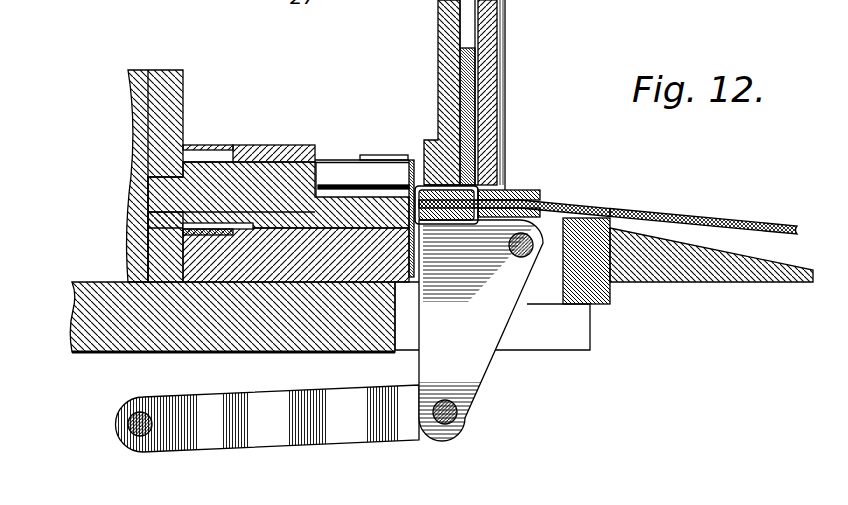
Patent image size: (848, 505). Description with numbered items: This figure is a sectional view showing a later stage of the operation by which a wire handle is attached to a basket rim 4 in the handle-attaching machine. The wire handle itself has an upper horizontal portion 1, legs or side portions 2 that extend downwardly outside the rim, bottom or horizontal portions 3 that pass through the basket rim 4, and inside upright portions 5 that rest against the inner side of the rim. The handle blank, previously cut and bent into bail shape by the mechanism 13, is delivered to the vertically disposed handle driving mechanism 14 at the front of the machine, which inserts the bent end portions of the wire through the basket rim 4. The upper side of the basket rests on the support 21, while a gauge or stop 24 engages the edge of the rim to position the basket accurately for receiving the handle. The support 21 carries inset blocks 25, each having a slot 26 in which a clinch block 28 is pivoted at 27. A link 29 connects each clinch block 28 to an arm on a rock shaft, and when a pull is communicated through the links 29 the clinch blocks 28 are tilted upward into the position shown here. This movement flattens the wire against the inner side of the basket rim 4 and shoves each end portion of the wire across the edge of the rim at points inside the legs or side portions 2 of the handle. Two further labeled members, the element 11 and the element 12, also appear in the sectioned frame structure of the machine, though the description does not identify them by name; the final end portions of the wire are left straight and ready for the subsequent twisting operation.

The upper horizontal portion 1 is at (318, 186).
The legs or side portions 2 is at (365, 186).
The bottom or horizontal portions 3 is at (485, 201).
The basket rim 4 is at (545, 193).
The inside upright portions 5 is at (460, 224).
The lower block 11 is at (415, 258).
The upper block 12 is at (268, 170).
The mechanism for cutting off and bending wire 13 is at (212, 149).
The handle driving mechanism 14 is at (452, 157).
The support 21 is at (677, 267).
The gauge or stop 24 is at (400, 352).
The inset blocks 25 is at (655, 216).
The slot 26 is at (550, 228).
The pivot 27 is at (583, 282).
The clinch block 28 is at (478, 370).
The links 29 is at (260, 430).